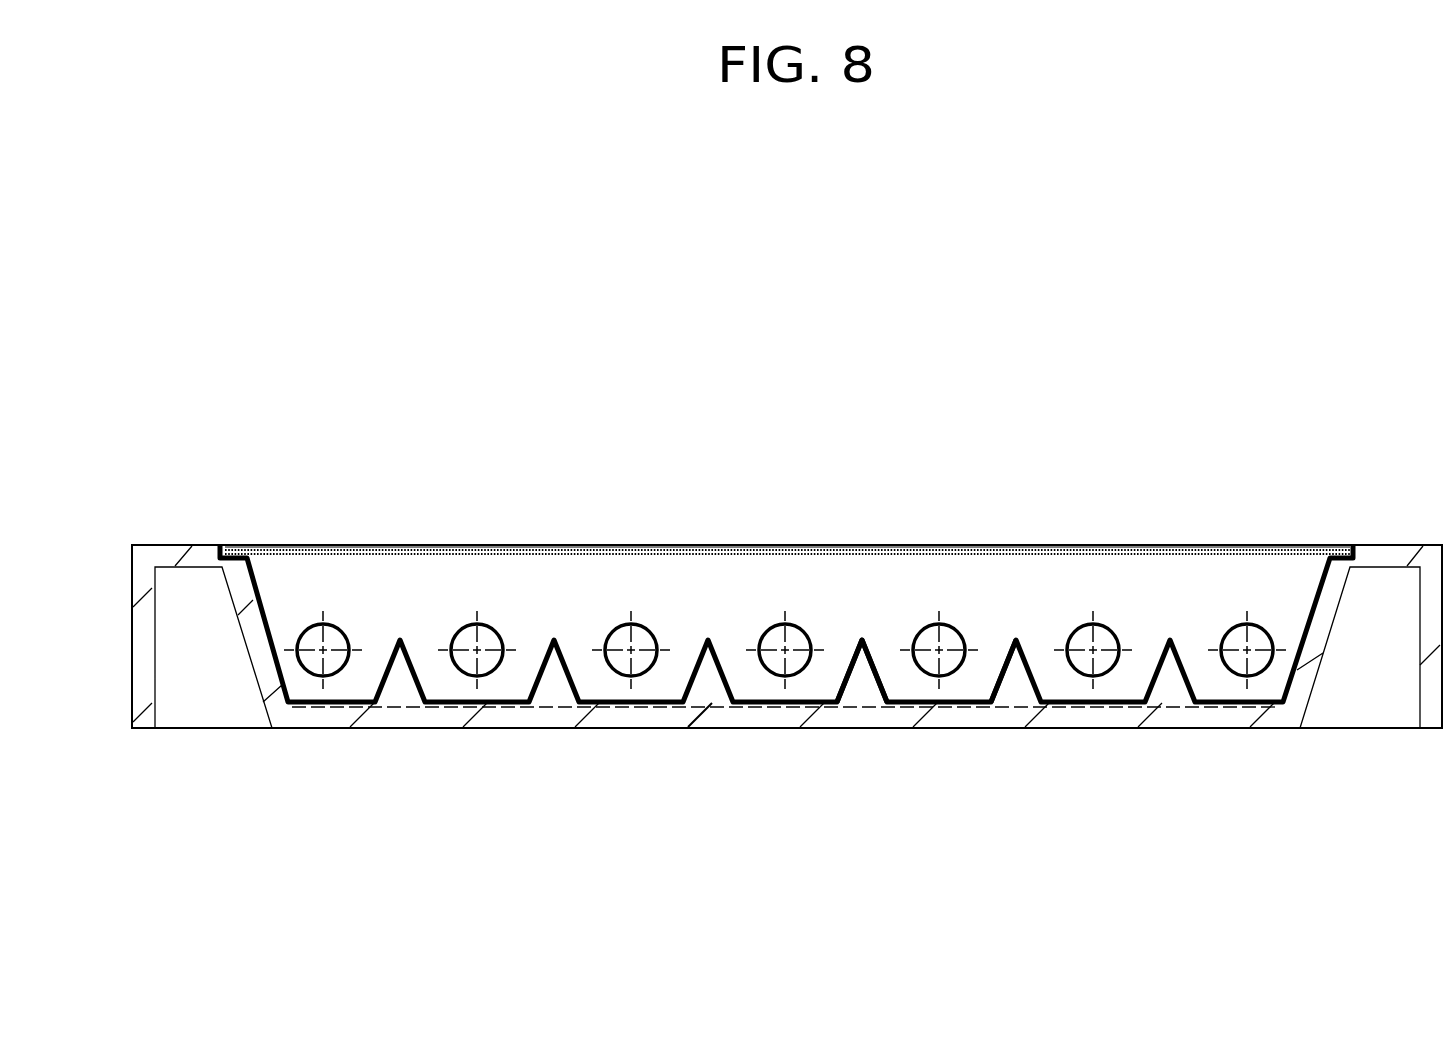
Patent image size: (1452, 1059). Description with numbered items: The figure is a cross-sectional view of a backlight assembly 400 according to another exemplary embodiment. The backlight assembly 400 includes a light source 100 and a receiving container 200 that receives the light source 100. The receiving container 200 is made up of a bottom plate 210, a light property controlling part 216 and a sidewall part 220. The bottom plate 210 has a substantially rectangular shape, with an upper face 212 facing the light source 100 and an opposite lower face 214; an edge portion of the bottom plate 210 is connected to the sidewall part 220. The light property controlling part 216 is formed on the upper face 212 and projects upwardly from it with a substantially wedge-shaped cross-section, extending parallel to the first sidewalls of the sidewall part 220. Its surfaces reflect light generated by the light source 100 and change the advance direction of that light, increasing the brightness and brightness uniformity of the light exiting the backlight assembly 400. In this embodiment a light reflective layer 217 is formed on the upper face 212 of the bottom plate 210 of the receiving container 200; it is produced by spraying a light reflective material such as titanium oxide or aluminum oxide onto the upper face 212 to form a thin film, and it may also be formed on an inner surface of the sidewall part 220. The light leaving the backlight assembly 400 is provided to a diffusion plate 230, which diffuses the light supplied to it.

The light source 100 is at (1222, 625).
The receiving container 200 is at (1242, 857).
The bottom plate 210 is at (1260, 741).
The upper face 212 is at (919, 691).
The lower face 214 is at (705, 730).
The light property controlling part 216 is at (841, 678).
The light reflective layer 217 is at (968, 691).
The sidewall part 220 is at (1327, 663).
The diffusion plate 230 is at (1092, 550).
The backlight assembly 400 is at (926, 522).